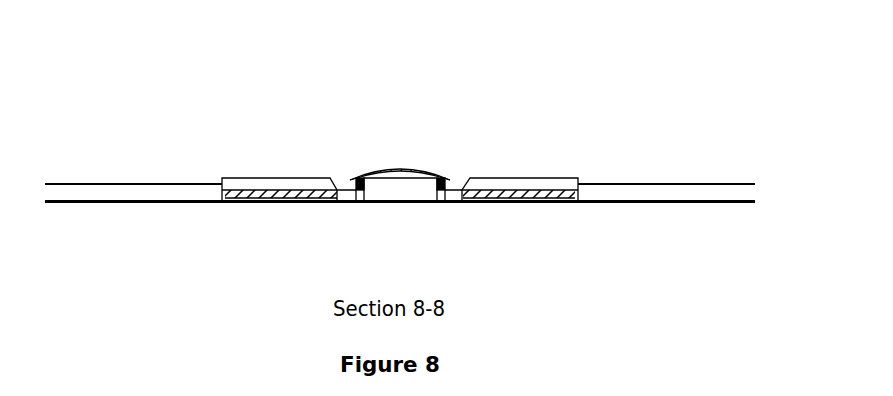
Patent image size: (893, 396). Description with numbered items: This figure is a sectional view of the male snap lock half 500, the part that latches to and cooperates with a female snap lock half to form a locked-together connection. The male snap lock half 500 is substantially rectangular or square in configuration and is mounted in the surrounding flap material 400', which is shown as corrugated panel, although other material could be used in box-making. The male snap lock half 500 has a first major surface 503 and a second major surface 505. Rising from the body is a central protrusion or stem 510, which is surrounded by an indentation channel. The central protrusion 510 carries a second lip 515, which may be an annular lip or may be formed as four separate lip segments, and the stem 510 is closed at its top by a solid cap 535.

The male snap lock half 500 is at (553, 110).
The surrounding flap material 400' is at (400, 149).
The second major surface 505 is at (265, 203).
The first major surface 503 is at (345, 177).
The central protrusion 510 is at (404, 166).
The second lip 515 is at (455, 177).
The solid cap 535 is at (392, 166).